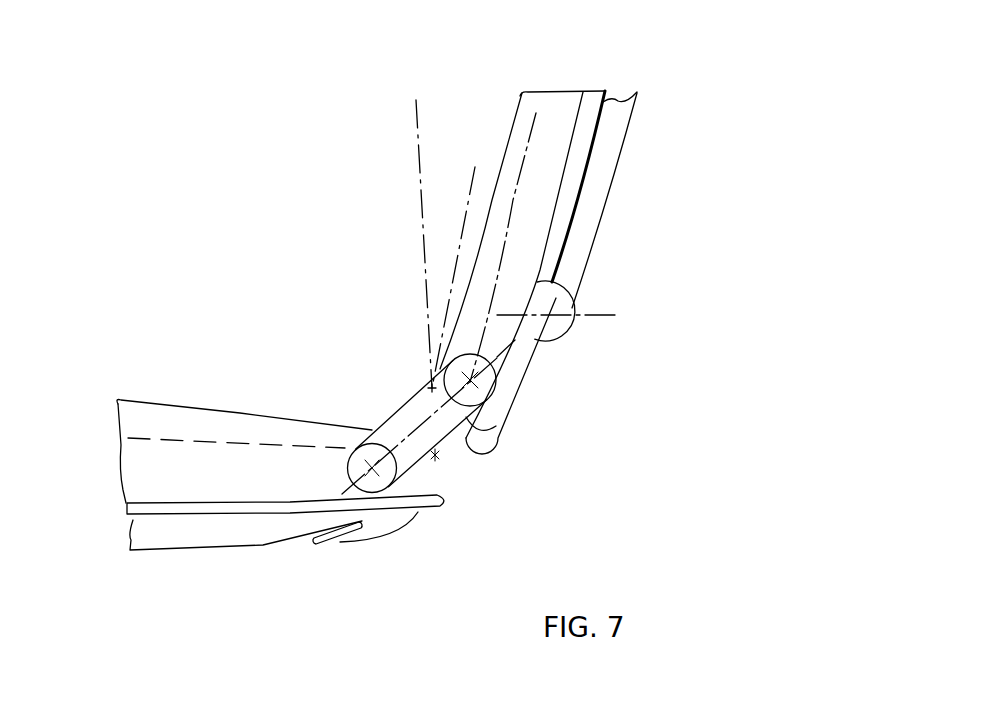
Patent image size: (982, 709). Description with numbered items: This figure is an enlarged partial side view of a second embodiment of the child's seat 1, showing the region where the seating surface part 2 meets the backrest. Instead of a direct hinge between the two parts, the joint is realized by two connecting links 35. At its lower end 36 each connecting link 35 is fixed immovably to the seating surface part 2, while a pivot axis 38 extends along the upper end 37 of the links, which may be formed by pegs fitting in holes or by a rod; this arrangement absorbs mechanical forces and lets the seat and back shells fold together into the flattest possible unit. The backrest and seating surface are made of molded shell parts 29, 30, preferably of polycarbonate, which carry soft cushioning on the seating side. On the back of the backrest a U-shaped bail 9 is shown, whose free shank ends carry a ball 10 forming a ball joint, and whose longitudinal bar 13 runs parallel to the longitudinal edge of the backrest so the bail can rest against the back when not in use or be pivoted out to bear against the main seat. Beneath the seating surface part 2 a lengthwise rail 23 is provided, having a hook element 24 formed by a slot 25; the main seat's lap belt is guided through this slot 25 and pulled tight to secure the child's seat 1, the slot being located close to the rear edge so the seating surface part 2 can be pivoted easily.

The child's seat 1 is at (370, 267).
The seating surface part 2 is at (552, 115).
The U-shaped bail 9 is at (622, 189).
The ball 10 is at (560, 327).
The longitudinal bar 13 is at (592, 238).
The lengthwise rail 23 is at (393, 517).
The hook element 24 is at (328, 551).
The slot 25 is at (335, 530).
The molded part 29 is at (580, 157).
The molded part 30 is at (128, 505).
The connecting link 35 is at (440, 430).
The lower end 36 is at (392, 475).
The upper end 37 is at (465, 403).
The pivot axis 38 is at (463, 385).